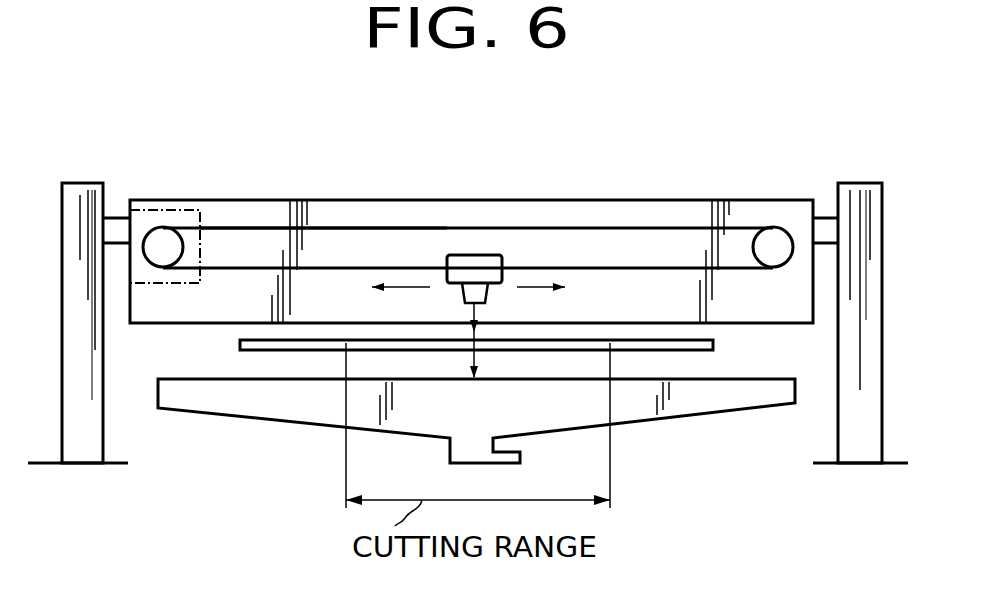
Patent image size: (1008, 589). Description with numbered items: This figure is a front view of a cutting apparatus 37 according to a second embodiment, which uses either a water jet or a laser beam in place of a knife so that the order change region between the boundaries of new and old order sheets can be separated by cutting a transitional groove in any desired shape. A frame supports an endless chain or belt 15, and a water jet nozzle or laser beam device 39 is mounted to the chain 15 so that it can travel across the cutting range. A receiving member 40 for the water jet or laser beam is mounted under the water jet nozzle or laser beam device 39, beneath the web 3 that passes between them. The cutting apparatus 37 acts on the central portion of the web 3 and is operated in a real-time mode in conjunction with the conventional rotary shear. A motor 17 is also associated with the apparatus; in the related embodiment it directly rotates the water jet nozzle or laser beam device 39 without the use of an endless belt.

The web 3 is at (250, 350).
The endless chain or belt 15 is at (377, 228).
The motor 17 is at (188, 210).
The cutting apparatus 37 is at (751, 194).
The water jet nozzle or laser beam device 39 is at (480, 255).
The receiving member 40 is at (273, 420).